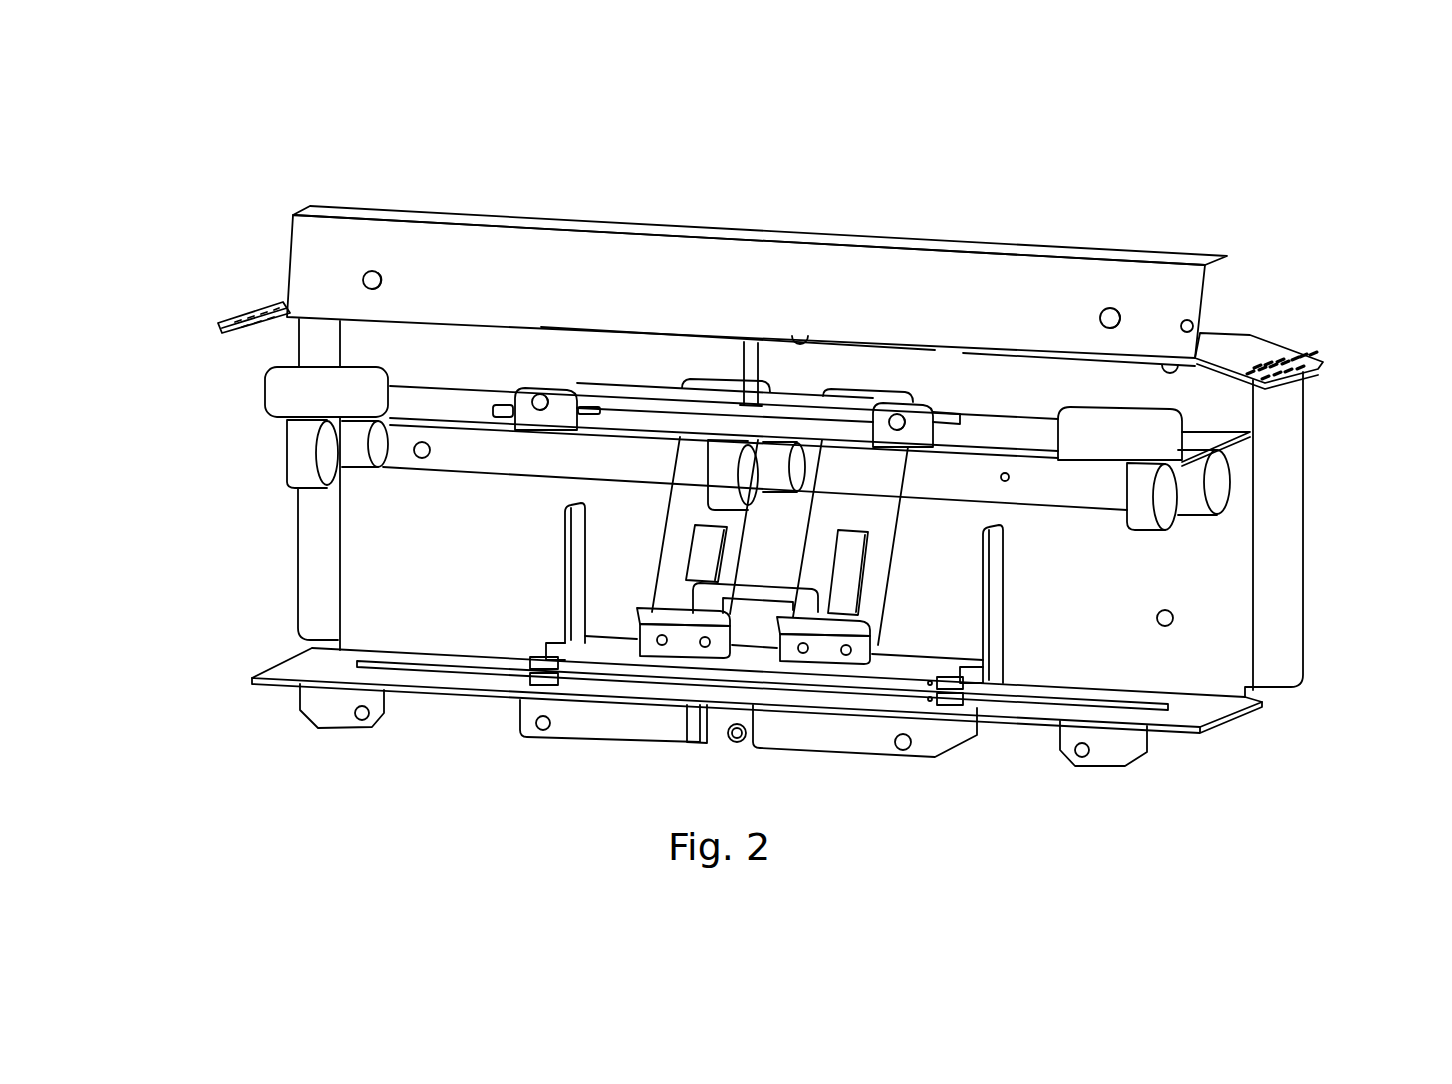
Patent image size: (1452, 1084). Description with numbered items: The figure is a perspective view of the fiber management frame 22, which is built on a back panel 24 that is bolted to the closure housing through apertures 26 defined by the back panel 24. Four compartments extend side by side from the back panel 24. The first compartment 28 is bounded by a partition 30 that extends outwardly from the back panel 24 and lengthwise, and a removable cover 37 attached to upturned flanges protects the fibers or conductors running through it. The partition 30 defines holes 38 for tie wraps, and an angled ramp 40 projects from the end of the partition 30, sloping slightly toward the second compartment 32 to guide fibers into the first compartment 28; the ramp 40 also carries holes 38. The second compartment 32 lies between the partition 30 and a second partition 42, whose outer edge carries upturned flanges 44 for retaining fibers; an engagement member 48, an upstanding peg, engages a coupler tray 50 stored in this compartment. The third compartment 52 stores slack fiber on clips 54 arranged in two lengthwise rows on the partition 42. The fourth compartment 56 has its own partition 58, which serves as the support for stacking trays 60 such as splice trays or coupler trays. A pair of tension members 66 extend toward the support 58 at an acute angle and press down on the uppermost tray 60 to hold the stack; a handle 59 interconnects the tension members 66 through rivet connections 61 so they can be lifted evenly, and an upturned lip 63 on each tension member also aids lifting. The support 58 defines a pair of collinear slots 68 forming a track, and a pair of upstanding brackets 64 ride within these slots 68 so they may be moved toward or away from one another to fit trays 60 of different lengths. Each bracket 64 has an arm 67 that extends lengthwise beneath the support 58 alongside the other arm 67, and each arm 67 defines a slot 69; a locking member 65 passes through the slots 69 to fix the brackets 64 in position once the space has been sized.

The fiber management frame 22 is at (1352, 345).
The back panel 24 is at (1240, 610).
The apertures 26 is at (1177, 618).
The first compartment 28 is at (809, 270).
The partition 30 is at (1279, 326).
The second compartment 32 is at (410, 358).
The cover 37 is at (945, 250).
The holes 38 is at (1268, 362).
The angled ramp 40 is at (247, 313).
The partition 42 is at (1013, 450).
The upturned flanges 44 is at (1160, 425).
The engagement member 48 is at (748, 362).
The coupler tray 50 is at (950, 400).
The third compartment 52 is at (272, 449).
The clips 54 is at (300, 467).
The fourth compartment 56 is at (292, 620).
The partition 58 is at (785, 680).
The handle 59 is at (755, 593).
The tray 60 is at (903, 663).
The rivet connections 61 is at (660, 637).
The upturned lip 63 is at (640, 612).
The upstanding bracket 64 is at (583, 530).
The locking member 65 is at (740, 742).
The tension members 66 is at (784, 541).
The arm 67 is at (710, 742).
The slot 68 is at (432, 672).
The slot 69 is at (698, 727).